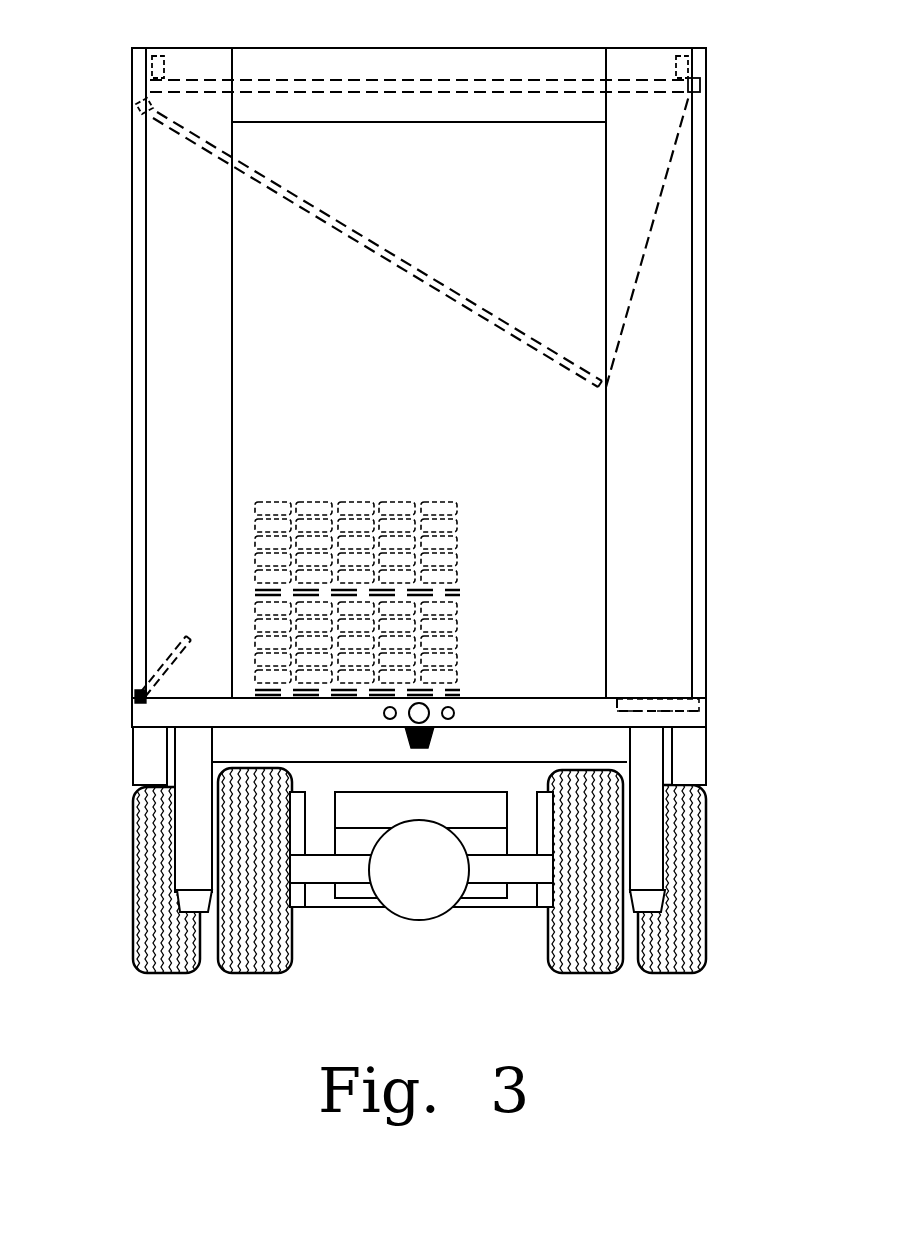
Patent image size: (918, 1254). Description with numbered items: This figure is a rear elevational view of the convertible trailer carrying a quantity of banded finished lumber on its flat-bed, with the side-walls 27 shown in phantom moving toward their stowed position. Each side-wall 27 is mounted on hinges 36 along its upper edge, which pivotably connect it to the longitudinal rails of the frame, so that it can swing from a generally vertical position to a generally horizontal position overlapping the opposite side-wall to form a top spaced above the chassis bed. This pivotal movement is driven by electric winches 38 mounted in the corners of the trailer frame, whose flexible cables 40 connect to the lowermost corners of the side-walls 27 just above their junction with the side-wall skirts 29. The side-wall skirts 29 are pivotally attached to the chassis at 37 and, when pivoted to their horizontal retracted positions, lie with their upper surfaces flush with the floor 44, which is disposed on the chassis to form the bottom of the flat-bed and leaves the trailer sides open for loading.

The side-wall 27 is at (358, 238).
The side-wall skirt 29 is at (173, 638).
The hinge 36 is at (147, 118).
The pivotal attachment 37 is at (132, 702).
The electric winch 38 is at (164, 58).
The flexible cable 40 is at (152, 78).
The floor 44 is at (510, 692).